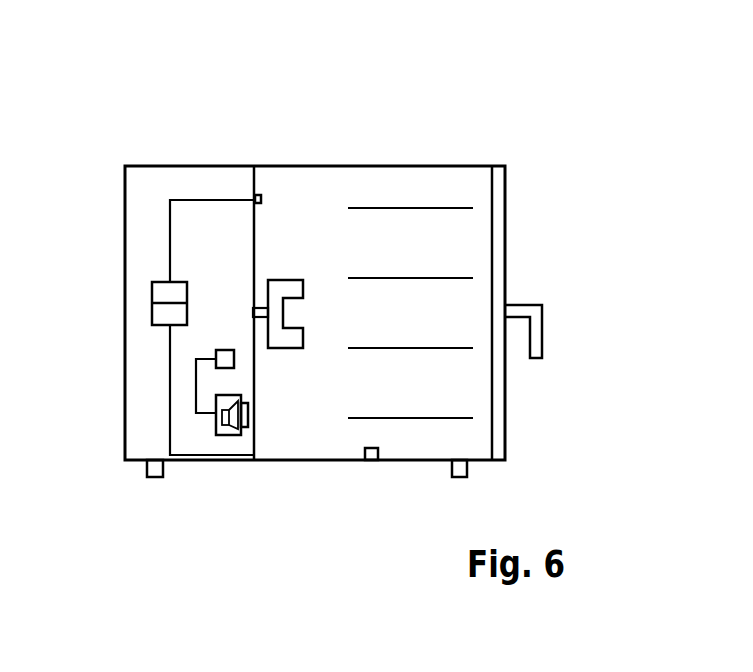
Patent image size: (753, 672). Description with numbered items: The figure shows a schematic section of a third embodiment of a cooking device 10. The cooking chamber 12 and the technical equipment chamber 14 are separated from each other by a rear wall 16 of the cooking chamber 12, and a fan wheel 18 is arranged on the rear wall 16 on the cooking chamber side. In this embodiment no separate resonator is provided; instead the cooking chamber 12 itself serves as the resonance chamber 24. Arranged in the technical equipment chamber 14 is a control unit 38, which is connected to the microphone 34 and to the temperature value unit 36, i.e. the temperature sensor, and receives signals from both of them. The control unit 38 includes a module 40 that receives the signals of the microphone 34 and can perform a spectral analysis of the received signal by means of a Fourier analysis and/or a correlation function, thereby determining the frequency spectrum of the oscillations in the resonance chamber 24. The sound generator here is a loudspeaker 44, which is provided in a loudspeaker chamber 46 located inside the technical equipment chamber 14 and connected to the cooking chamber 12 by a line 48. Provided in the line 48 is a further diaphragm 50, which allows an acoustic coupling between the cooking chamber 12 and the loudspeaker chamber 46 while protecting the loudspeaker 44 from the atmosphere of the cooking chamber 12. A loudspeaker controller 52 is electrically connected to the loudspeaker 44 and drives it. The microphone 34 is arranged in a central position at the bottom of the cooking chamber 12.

The cooking device 10 is at (314, 90).
The cooking chamber 12 is at (397, 316).
The resonance chamber 24 is at (410, 182).
The technical equipment chamber 14 is at (145, 183).
The rear wall 16 is at (255, 227).
The fan wheel 18 is at (287, 287).
The microphone 34 is at (372, 461).
The temperature value unit 36 is at (262, 198).
The control unit 38 is at (138, 294).
The module 40 is at (158, 312).
The loudspeaker 44 is at (238, 434).
The loudspeaker chamber 46 is at (224, 437).
The line 48 is at (272, 408).
The further diaphragm 50 is at (248, 416).
The loudspeaker controller 52 is at (215, 356).